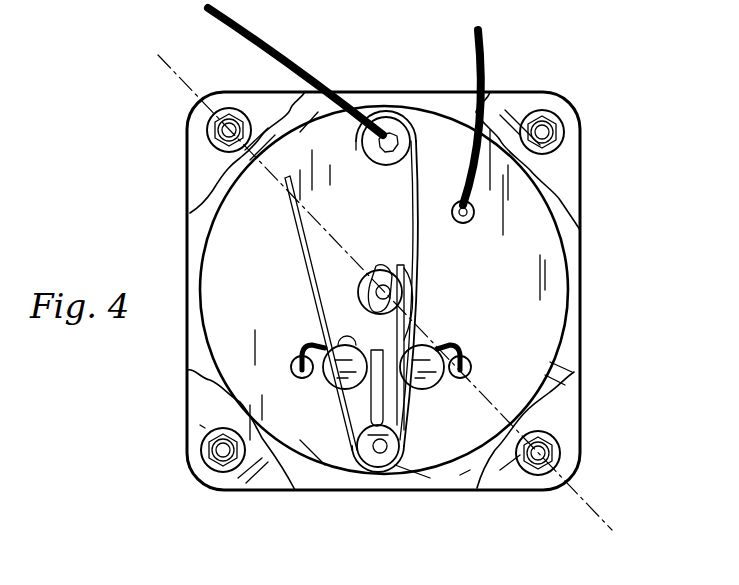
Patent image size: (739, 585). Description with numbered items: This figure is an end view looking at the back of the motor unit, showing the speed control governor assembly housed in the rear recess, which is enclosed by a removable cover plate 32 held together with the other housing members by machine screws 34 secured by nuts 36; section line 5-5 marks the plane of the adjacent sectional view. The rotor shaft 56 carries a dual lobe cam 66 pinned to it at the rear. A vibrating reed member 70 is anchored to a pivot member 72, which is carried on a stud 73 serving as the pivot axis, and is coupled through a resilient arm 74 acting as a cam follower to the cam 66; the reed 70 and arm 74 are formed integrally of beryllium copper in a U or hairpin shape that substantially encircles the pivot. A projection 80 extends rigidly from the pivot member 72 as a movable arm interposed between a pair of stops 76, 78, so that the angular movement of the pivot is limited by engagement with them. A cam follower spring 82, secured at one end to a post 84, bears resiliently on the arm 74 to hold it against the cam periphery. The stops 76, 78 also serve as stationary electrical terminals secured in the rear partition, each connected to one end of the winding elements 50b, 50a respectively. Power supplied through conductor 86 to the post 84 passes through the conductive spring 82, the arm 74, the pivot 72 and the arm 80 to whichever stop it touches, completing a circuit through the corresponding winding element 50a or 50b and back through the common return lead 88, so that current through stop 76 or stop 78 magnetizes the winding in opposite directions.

The section line 5- 5 is at (168, 70).
The cover plate 32 is at (205, 162).
The machine screws 34 is at (553, 127).
The nuts 36 is at (555, 133).
The winding element 50a is at (470, 349).
The winding element 50b is at (300, 347).
The shaft 56 is at (364, 286).
The dual lobe cam 66 is at (393, 268).
The vibrating reed member 70 is at (296, 228).
The pivot member 72 is at (370, 454).
The stud 73 is at (384, 454).
The resilient arm 74 is at (414, 284).
The stop 76 is at (334, 378).
The stop 78 is at (425, 386).
The projection 80 is at (388, 404).
The cam follower spring 82 is at (416, 198).
The post 84 is at (386, 125).
The conductor 86 is at (276, 40).
The common return lead 88 is at (490, 56).